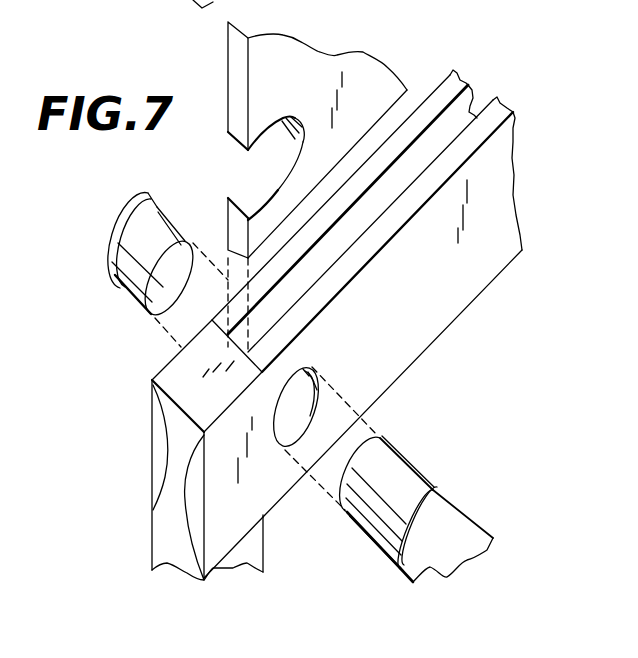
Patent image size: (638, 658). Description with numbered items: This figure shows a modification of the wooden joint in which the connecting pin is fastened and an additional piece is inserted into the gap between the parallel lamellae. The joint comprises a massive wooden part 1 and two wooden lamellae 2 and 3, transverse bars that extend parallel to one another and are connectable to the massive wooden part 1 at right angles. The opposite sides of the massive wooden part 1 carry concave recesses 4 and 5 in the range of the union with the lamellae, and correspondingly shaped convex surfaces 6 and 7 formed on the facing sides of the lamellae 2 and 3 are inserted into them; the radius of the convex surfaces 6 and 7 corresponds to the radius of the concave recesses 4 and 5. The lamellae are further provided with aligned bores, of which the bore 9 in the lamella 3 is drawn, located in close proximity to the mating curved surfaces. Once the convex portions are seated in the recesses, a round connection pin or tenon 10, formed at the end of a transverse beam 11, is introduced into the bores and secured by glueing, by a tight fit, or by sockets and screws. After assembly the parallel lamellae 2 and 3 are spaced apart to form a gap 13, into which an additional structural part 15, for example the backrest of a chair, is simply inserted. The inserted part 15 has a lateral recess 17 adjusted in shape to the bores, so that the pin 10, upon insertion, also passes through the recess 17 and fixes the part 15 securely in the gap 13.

The massive wooden part 1 is at (173, 560).
The wooden lamella 2 is at (434, 93).
The wooden lamella 3 is at (497, 236).
The concave recess 4 is at (102, 447).
The convex surface 6 is at (194, 507).
The concave recess 5 is at (300, 547).
The convex surface 7 is at (233, 547).
The bore 9 is at (300, 397).
The connection pin 10 is at (395, 478).
The transverse beam 11 is at (463, 525).
The gap 13 is at (462, 114).
The additional structural part 15 is at (326, 60).
The lateral recess 17 is at (247, 160).